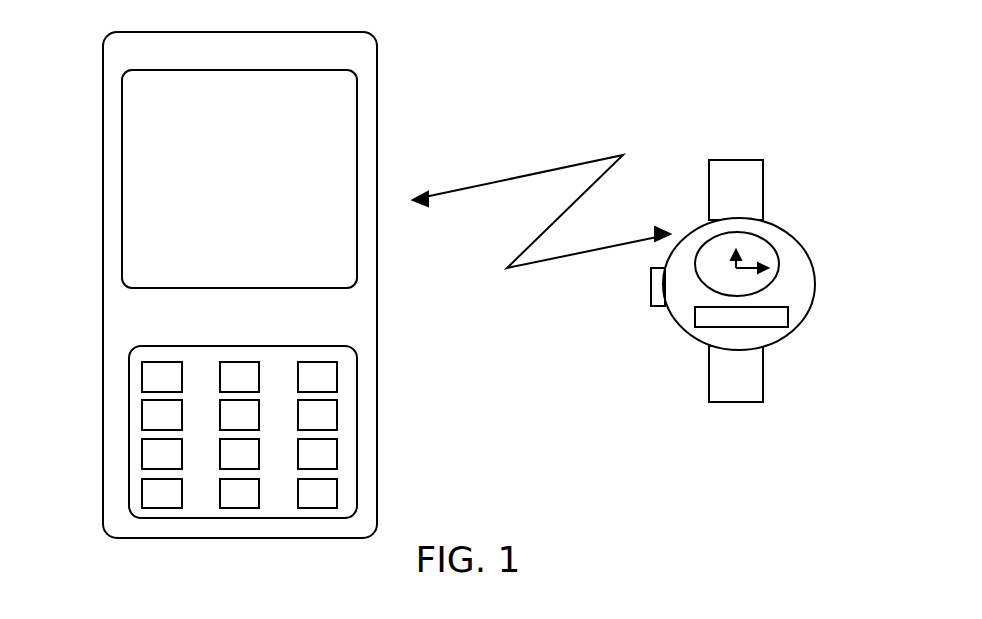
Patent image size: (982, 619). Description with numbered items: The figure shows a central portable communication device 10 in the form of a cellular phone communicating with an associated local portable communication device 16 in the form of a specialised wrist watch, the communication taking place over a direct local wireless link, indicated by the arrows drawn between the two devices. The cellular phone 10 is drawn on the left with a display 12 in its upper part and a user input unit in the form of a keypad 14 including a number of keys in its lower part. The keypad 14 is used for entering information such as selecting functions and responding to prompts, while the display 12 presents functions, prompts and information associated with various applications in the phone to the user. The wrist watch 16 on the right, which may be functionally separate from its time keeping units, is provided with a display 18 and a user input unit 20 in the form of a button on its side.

The central portable communication device 10 is at (418, 115).
The display 12 is at (121, 138).
The keypad 14 is at (357, 441).
The local portable communication device 16 is at (722, 110).
The display 18 is at (788, 323).
The user input unit 20 is at (651, 306).